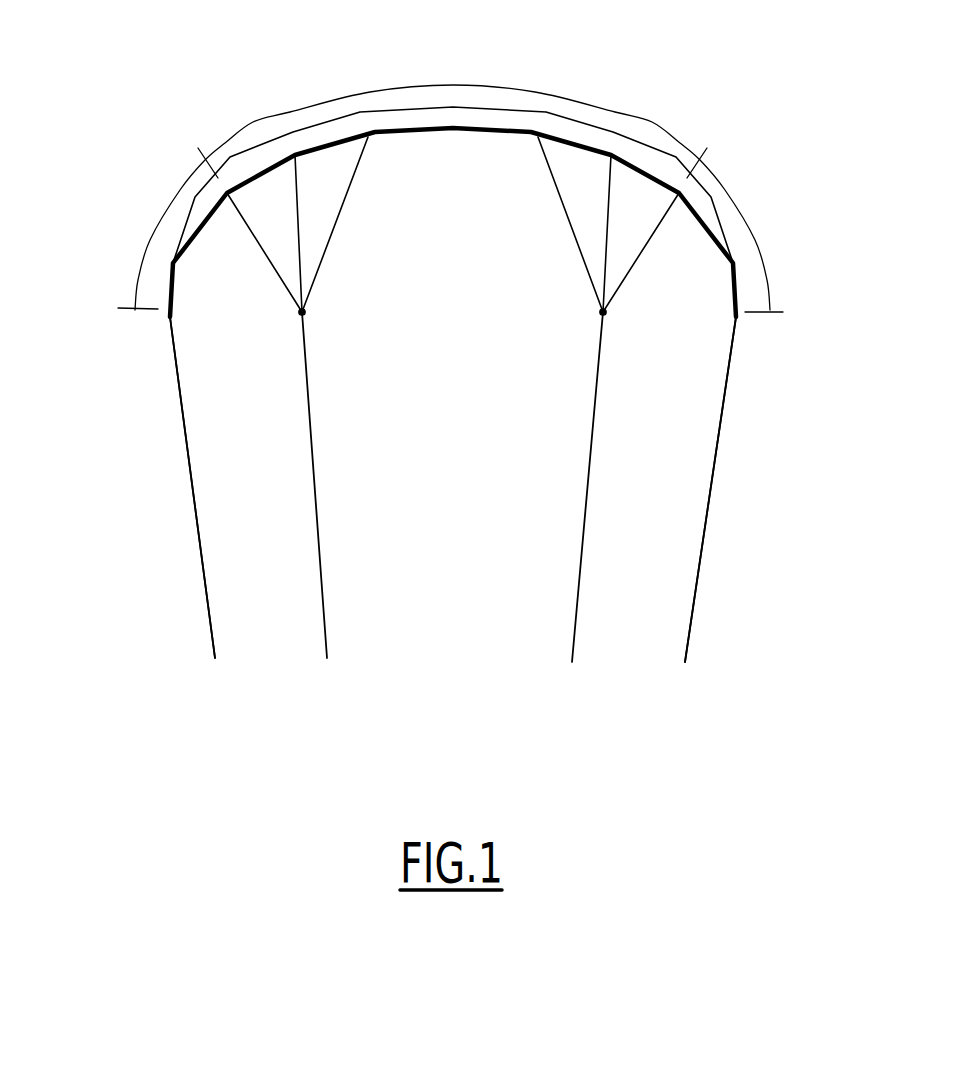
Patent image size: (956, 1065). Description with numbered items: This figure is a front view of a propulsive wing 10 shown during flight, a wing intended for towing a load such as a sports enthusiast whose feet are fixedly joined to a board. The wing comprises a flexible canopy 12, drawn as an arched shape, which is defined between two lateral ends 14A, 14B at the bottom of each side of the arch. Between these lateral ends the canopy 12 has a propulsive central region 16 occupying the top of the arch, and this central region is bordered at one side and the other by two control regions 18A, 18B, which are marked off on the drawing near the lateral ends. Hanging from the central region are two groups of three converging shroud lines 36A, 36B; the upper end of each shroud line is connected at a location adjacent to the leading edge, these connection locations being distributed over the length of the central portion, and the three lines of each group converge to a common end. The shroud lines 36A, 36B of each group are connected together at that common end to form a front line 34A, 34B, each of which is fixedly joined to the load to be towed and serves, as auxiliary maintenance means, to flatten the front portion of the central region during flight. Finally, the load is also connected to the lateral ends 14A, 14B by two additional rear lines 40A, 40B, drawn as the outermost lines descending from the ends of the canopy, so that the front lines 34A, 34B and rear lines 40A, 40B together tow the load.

The propulsive wing 10 is at (248, 93).
The flexible canopy 12 is at (498, 122).
The propulsive central region 16 is at (455, 83).
The control region 18A is at (162, 208).
The control region 18B is at (745, 212).
The lateral end 14A is at (158, 324).
The lateral end 14B is at (745, 338).
The shroud lines 36A is at (298, 215).
The shroud lines 36B is at (608, 218).
The front line 34A is at (320, 575).
The front line 34B is at (575, 628).
The rear line 40A is at (201, 571).
The rear line 40B is at (695, 609).